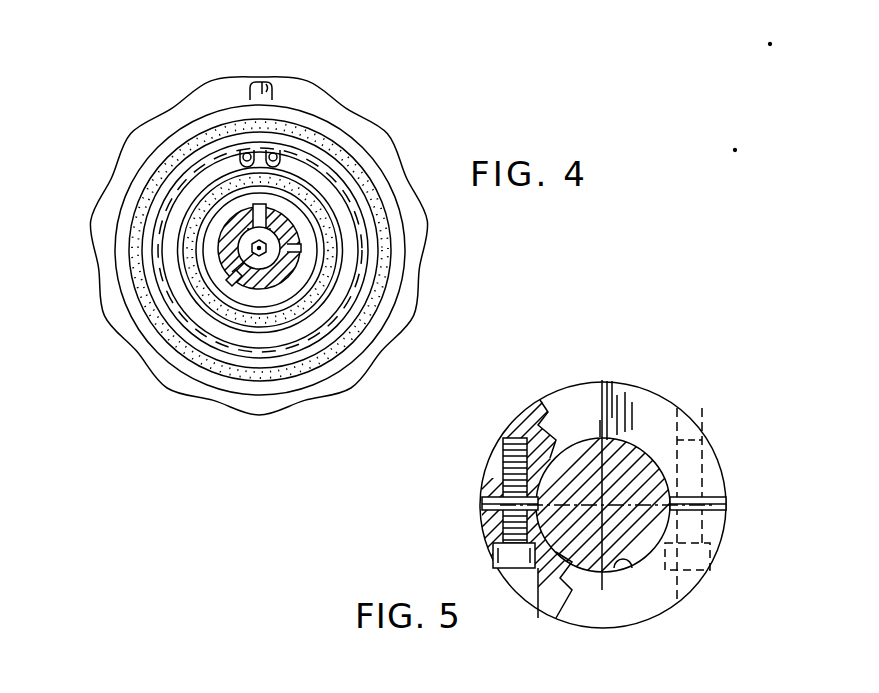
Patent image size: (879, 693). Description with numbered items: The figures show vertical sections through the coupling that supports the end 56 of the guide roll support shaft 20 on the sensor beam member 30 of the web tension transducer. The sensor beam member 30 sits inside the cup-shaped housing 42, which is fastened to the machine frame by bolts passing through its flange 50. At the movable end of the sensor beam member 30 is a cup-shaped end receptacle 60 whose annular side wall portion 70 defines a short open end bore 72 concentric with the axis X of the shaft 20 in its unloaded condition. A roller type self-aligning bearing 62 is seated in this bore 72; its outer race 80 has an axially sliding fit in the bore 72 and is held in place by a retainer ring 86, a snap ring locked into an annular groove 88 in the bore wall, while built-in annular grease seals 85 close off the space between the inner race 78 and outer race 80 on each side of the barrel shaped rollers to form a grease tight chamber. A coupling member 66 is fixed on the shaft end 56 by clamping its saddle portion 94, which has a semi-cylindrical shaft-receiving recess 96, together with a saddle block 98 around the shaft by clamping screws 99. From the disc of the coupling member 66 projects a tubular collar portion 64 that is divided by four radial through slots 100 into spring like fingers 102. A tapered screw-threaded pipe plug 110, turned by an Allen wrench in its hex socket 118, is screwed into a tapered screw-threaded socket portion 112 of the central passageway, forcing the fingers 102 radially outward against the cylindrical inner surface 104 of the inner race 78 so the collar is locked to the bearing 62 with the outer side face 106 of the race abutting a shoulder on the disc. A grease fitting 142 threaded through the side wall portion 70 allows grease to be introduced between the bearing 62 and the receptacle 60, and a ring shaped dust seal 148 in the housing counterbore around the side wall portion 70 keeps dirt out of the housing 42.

In FIG. 5, the guide roll support shaft 20 is at (588, 460).
In FIG. 4, the sensor beam member 30 is at (208, 365).
In FIG. 4, the housing 42 is at (222, 97).
In FIG. 4, the flange 50 is at (412, 217).
In FIG. 5, the shaft end 56 is at (632, 455).
In FIG. 4, the cup-shaped end receptacle 60 is at (152, 185).
In FIG. 4, the self-aligning bearing 62 is at (357, 225).
In FIG. 4, the tubular collar portion 64 is at (293, 225).
In FIG. 5, the coupling member 66 is at (486, 525).
In FIG. 4, the annular side wall portion 70 is at (150, 252).
In FIG. 4, the open end bore 72 is at (218, 247).
In FIG. 4, the inner race 78 is at (300, 282).
In FIG. 4, the outer race 80 is at (231, 300).
In FIG. 4, the annular grease seals 85 is at (268, 292).
In FIG. 4, the retainer ring 86 is at (208, 170).
In FIG. 4, the annular groove 88 is at (222, 152).
In FIG. 5, the saddle portion 94 is at (557, 597).
In FIG. 5, the semi-cylindrical shaft-receiving recess 96 is at (632, 567).
In FIG. 5, the saddle block 98 is at (542, 430).
In FIG. 5, the clamping screws 99 is at (512, 470).
In FIG. 4, the radial through slots 100 is at (293, 210).
In FIG. 4, the spring like fingers 102 is at (345, 222).
In FIG. 4, the cylindrical inner surface 104 is at (232, 280).
In FIG. 4, the outer side face 106 is at (215, 264).
In FIG. 4, the tapered screw-threaded pipe plug 110 is at (272, 282).
In FIG. 4, the tapered screw-threaded socket portion 112 is at (268, 205).
In FIG. 4, the hex socket 118 is at (252, 292).
In FIG. 4, the grease fitting 142 is at (262, 80).
In FIG. 4, the ring shaped dust seal 148 is at (352, 322).
In FIG. 5, the axis X is at (602, 515).